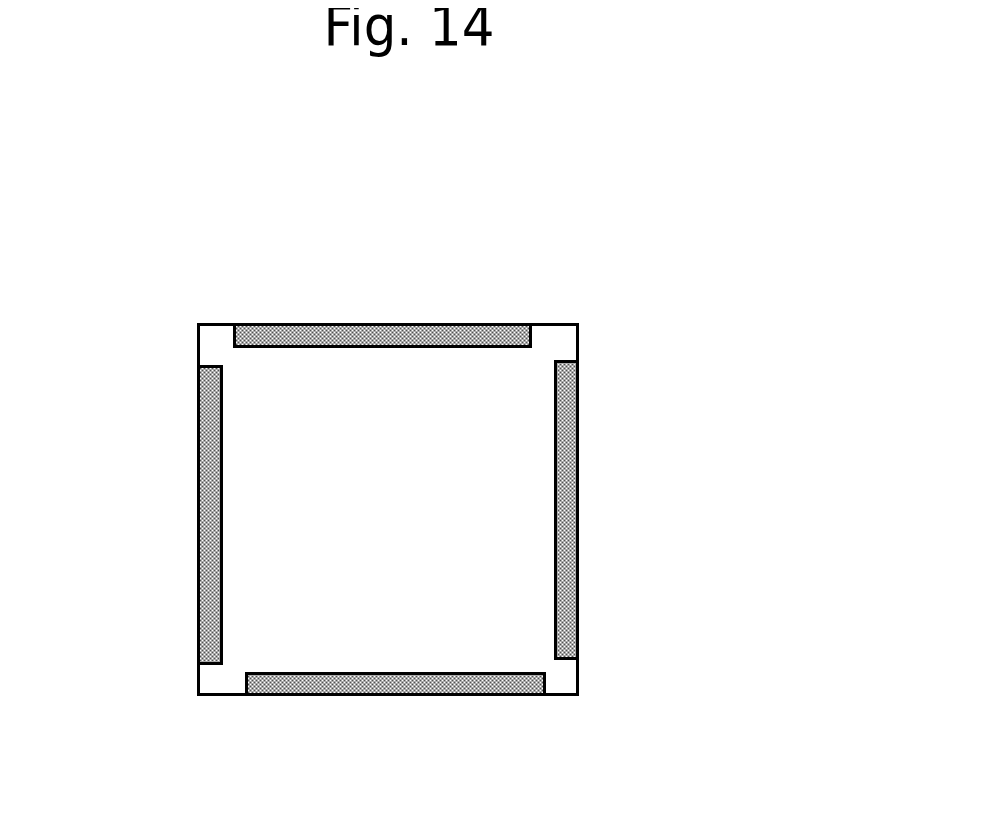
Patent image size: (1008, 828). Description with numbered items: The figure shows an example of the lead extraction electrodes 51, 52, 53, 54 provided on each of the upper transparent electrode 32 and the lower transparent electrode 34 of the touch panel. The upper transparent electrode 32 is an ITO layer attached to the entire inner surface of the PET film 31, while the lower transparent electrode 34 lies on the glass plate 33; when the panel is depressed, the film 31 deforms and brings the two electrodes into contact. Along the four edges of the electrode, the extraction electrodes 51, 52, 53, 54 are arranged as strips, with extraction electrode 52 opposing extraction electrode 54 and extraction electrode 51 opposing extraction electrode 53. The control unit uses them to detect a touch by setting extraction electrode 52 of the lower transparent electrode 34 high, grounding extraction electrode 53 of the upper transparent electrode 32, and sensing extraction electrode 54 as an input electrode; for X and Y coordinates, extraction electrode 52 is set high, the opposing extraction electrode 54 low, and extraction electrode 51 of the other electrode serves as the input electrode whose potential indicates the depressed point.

The film 31 is at (473, 473).
The glass plate 33 is at (389, 510).
The upper transparent electrode 32 is at (625, 296).
The lower transparent electrode 34 is at (388, 510).
The extraction electrode 51 is at (393, 684).
The extraction electrode 52 is at (204, 504).
The extraction electrode 53 is at (354, 330).
The extraction electrode 54 is at (573, 509).